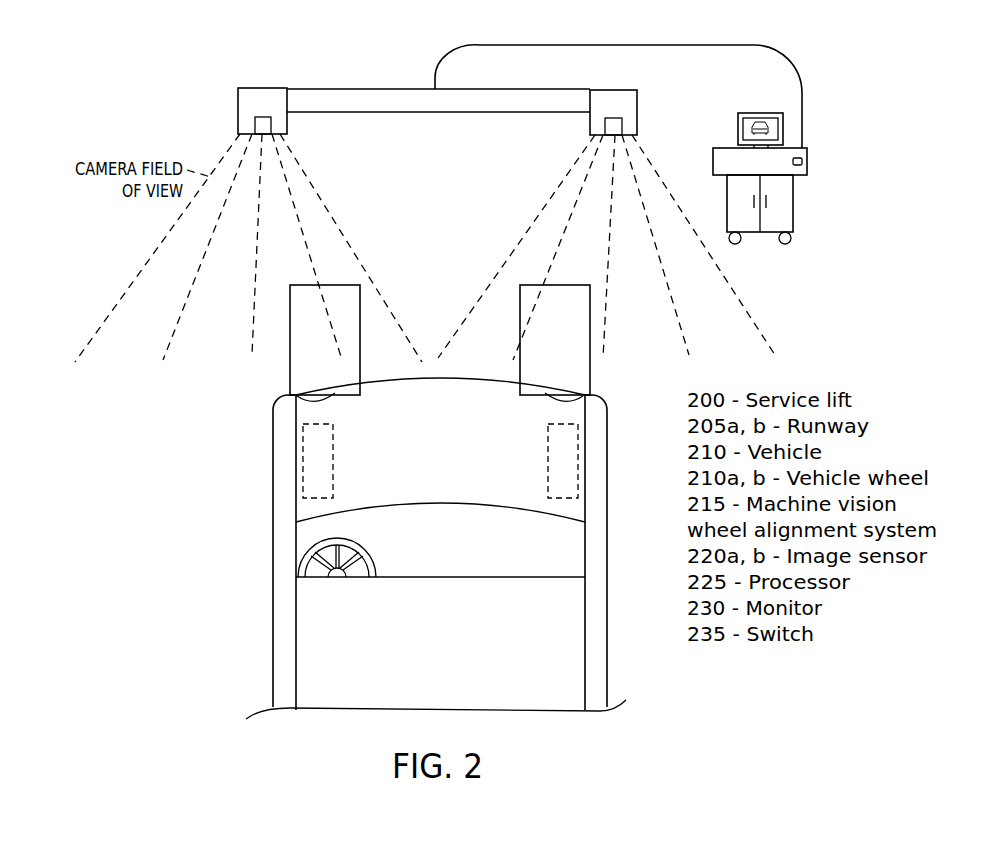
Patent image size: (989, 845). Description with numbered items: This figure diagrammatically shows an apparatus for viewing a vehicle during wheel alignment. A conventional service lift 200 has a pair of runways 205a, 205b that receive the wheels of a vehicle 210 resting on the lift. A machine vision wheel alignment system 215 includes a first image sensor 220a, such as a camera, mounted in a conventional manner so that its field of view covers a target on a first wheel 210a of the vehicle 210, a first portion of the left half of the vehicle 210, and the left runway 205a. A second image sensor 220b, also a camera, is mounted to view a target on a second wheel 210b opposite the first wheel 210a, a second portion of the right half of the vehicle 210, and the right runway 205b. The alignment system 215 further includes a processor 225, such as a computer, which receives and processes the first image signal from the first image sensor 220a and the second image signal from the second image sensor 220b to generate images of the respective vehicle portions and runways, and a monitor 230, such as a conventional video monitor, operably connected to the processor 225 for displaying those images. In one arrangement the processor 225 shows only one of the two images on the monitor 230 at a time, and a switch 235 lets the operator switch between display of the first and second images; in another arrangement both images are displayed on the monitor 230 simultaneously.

The service lift 200 is at (632, 427).
The left runway 205a is at (300, 370).
The right runway 205b is at (580, 370).
The vehicle 210 is at (315, 627).
The first wheel 210a is at (298, 483).
The second wheel 210b is at (580, 475).
The machine vision wheel alignment system 215 is at (253, 71).
The first image sensor 220a is at (255, 105).
The second image sensor 220b is at (630, 102).
The processor 225 is at (787, 213).
The monitor 230 is at (750, 112).
The switch 235 is at (805, 160).